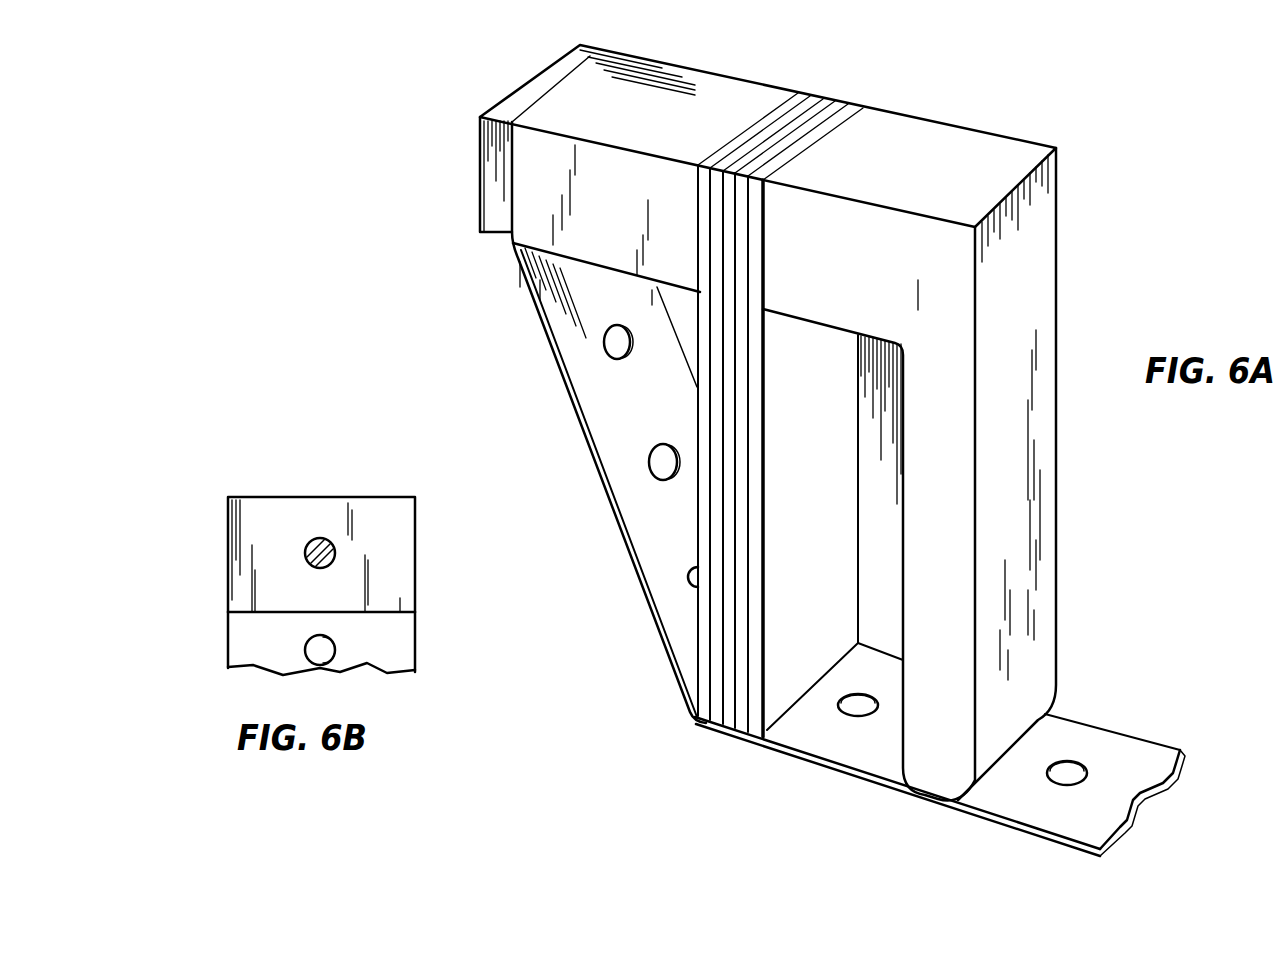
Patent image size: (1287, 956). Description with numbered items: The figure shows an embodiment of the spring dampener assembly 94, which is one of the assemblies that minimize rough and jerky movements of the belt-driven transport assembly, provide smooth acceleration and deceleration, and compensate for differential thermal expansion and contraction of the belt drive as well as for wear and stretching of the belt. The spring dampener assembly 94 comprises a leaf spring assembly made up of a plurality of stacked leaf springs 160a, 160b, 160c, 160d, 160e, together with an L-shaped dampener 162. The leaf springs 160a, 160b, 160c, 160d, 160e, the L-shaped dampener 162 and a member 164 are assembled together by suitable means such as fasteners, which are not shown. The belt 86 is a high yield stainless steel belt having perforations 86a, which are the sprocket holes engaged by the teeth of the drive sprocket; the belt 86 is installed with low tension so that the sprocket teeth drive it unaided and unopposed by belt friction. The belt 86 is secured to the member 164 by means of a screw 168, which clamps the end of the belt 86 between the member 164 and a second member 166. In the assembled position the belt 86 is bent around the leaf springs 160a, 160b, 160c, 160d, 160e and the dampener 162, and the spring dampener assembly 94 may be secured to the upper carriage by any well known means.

In FIG. 6A, the spring dampener assembly 94 is at (984, 118).
In FIG. 6A, the L-shaped dampener 162 is at (1049, 510).
In FIG. 6A, the member 164 is at (722, 110).
In FIG. 6A, the member 166 is at (495, 108).
In FIG. 6B, the member 166 is at (310, 497).
In FIG. 6B, the screw 168 is at (320, 540).
In FIG. 6A, the leaf spring 160a is at (688, 690).
In FIG. 6A, the leaf spring 160b is at (810, 93).
In FIG. 6A, the leaf spring 160c is at (717, 723).
In FIG. 6A, the leaf spring 160d is at (735, 722).
In FIG. 6A, the leaf spring 160e is at (758, 732).
In FIG. 6A, the belt 86 is at (1105, 727).
In FIG. 6B, the belt 86 is at (407, 652).
In FIG. 6A, the perforations 86a is at (1076, 767).
In FIG. 6B, the perforations 86a is at (338, 648).